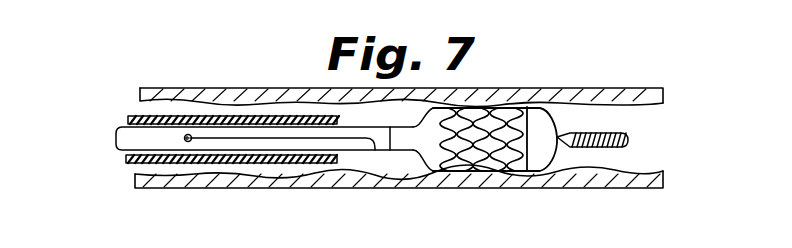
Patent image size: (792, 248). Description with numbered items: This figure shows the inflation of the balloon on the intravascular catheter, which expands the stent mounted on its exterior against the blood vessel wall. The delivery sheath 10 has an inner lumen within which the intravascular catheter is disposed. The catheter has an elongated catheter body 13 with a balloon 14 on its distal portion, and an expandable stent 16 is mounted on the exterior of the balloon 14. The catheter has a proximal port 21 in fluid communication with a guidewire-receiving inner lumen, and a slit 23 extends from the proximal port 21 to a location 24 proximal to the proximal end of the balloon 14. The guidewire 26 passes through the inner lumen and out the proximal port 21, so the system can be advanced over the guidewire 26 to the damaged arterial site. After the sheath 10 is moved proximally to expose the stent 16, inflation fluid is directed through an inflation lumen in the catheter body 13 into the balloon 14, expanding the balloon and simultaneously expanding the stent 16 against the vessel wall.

The delivery sheath 10 is at (287, 116).
The catheter body 13 is at (128, 135).
The balloon 14 is at (538, 118).
The expandable stent 16 is at (534, 152).
The proximal port 21 is at (183, 142).
The slit 23 is at (263, 141).
The location proximal to the proximal end of balloon 24 is at (376, 151).
The guidewire 26 is at (187, 135).